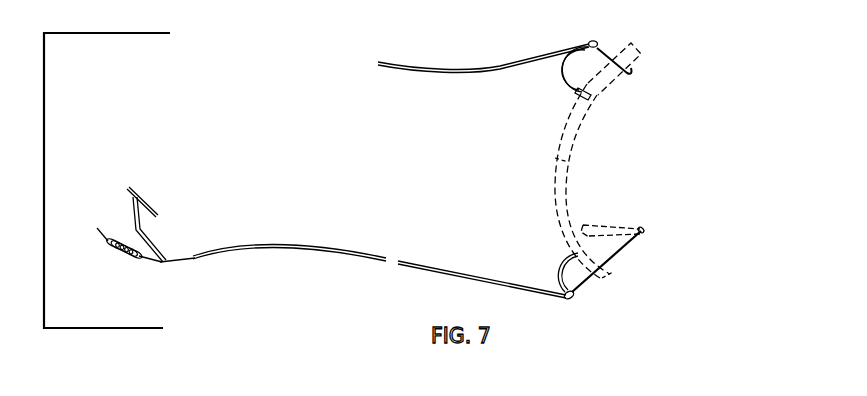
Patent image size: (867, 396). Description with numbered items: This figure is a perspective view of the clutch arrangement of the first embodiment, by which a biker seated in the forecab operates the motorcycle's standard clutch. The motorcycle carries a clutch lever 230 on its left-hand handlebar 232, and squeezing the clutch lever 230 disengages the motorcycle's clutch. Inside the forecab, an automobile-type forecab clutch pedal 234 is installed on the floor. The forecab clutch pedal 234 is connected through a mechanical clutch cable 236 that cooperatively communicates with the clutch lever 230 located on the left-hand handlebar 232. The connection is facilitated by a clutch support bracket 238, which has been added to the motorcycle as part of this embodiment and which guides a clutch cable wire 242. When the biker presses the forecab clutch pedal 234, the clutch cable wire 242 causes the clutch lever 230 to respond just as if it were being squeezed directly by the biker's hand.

The clutch lever 230 is at (632, 230).
The left-hand handlebar 232 is at (556, 205).
The forecab clutch pedal 234 is at (150, 193).
The mechanical clutch cable 236 is at (253, 220).
The clutch support bracket 238 is at (557, 270).
The clutch cable wire 242 is at (625, 248).